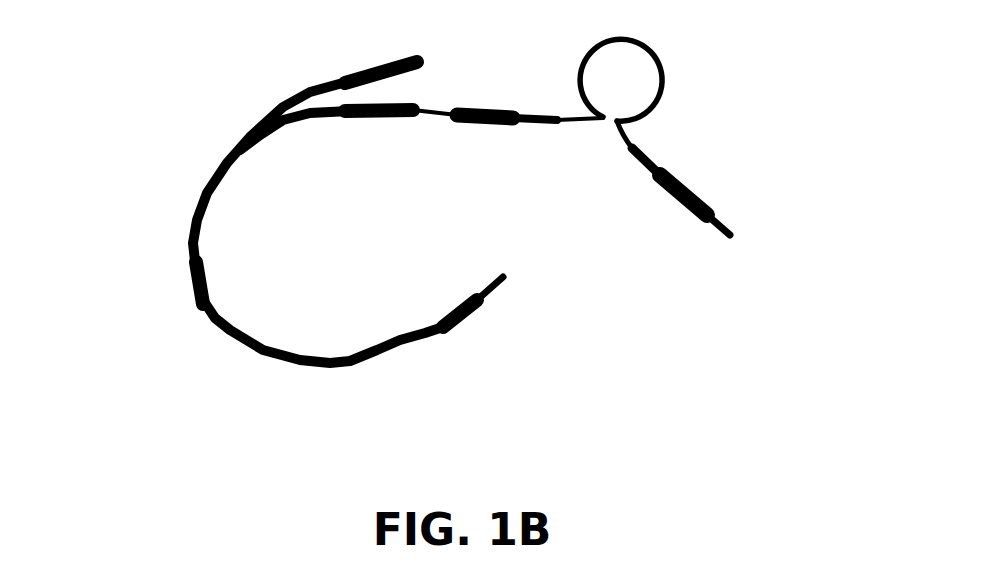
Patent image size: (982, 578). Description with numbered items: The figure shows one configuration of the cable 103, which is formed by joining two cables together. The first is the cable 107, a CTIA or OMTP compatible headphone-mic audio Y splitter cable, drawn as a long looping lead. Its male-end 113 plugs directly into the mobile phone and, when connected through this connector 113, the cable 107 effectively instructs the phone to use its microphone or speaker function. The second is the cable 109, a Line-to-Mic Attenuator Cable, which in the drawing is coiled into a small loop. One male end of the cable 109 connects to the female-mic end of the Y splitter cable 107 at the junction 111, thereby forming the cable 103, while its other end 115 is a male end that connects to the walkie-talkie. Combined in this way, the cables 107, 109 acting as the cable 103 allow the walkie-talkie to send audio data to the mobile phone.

The cable 103 is at (459, 225).
The cable 107 is at (190, 215).
The cable 109 is at (660, 50).
The junction 111 is at (428, 98).
The male-end 113 is at (500, 288).
The other end 115 is at (737, 223).